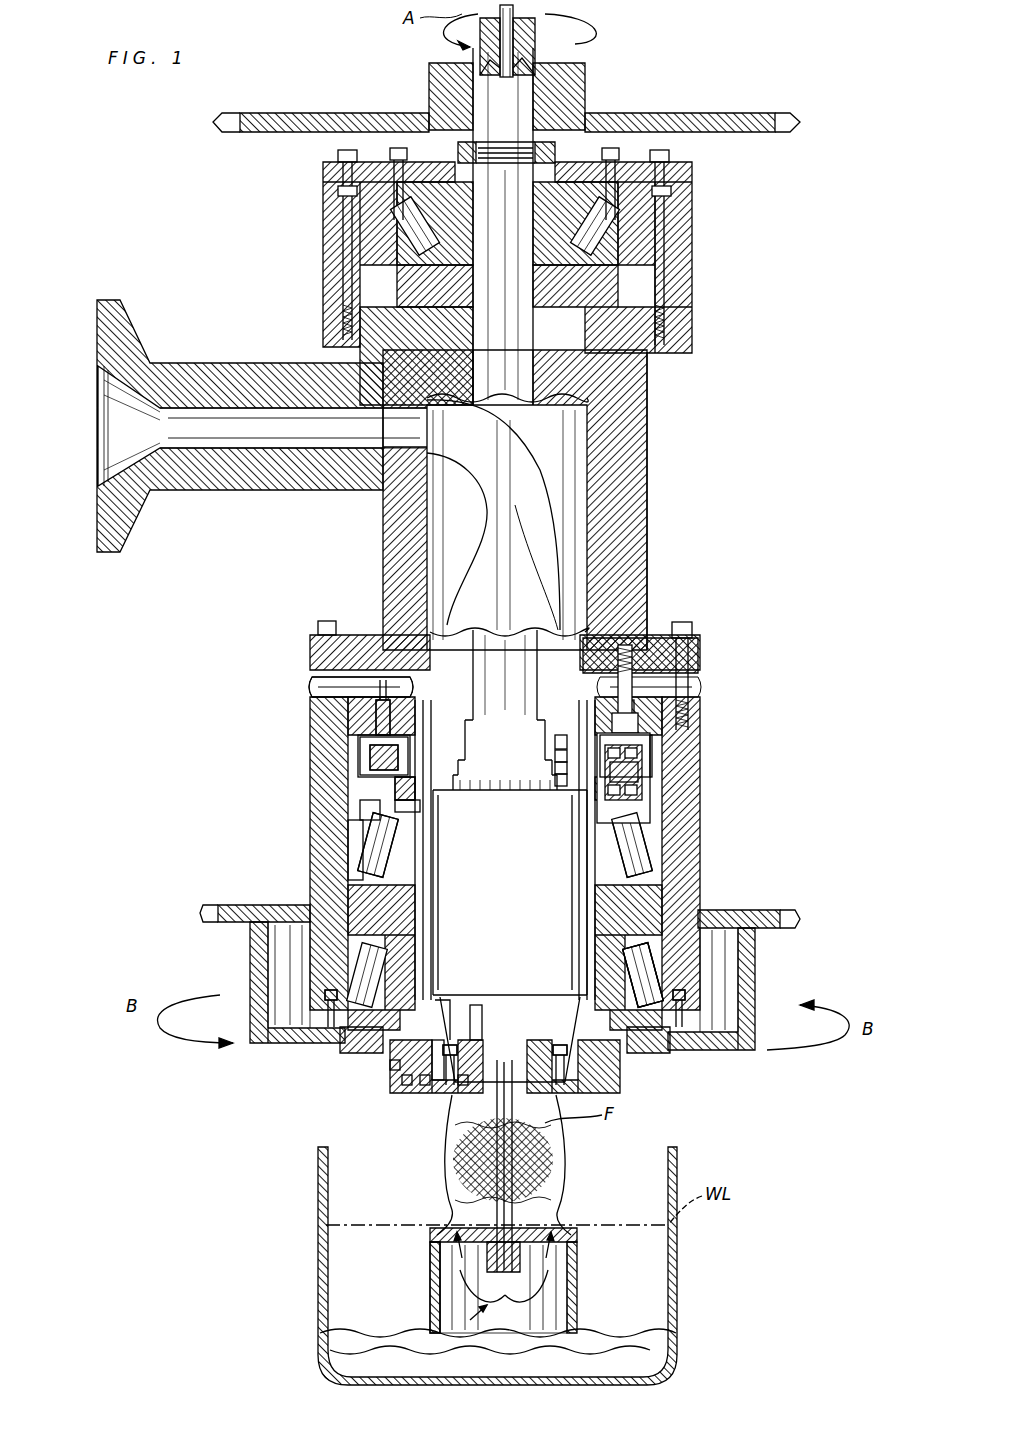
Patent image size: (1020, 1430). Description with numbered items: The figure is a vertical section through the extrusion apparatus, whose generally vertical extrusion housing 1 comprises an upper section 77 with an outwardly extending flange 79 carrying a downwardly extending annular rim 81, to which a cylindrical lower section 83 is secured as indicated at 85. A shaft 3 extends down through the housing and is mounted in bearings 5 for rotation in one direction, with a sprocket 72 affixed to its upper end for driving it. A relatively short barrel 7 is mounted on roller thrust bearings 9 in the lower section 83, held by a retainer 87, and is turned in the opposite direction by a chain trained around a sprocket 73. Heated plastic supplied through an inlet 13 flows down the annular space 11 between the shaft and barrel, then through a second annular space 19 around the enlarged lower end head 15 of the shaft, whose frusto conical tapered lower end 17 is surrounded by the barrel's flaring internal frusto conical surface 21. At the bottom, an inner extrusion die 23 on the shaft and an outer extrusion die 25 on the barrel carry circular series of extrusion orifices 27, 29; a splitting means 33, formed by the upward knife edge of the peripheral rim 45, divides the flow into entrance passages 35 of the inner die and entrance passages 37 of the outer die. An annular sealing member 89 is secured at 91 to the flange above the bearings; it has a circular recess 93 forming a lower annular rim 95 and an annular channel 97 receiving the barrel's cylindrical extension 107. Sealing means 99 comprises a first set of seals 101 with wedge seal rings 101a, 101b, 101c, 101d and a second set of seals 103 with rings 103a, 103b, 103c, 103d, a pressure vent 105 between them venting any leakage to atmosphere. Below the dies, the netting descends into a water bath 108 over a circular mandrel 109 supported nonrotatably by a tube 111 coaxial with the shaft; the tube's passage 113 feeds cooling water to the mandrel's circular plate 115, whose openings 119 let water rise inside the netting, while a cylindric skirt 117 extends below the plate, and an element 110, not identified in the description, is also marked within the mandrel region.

The extrusion housing 1 is at (650, 462).
The shaft 3 is at (548, 363).
The bearings 5 is at (655, 210).
The barrel 7 is at (655, 918).
The roller thrust bearings 9 is at (372, 850).
The annular space 11 is at (358, 740).
The inlet 13 is at (98, 452).
The lower end head 15 is at (510, 812).
The tapered lower end 17 is at (565, 1000).
The second annular space 19 is at (648, 965).
The internal frusto conical surface 21 is at (635, 992).
The inner extrusion die 23 is at (480, 1085).
The outer extrusion die 25 is at (395, 1065).
The extrusion orifices 27 is at (425, 1082).
The extrusion orifices 29 is at (408, 1080).
The splitting means 33 is at (445, 1015).
The entrance passages 35 is at (448, 1042).
The entrance passages 37 is at (390, 1060).
The peripheral rim 45 is at (478, 1040).
The sprocket 72 is at (728, 115).
The sprocket 73 is at (785, 912).
The upper section 77 is at (647, 418).
The flange 79 is at (668, 632).
The annular rim 81 is at (698, 672).
The lower section 83 is at (310, 892).
The securing means 85 is at (318, 628).
The retainer 87 is at (310, 1045).
The annular sealing member 89 is at (376, 712).
The securing means 91 is at (665, 710).
The circular recess 93 is at (412, 806).
The lower annular rim 95 is at (352, 830).
The annular channel 97 is at (372, 750).
The sealing means 99 is at (398, 780).
The first set of seals 101 is at (650, 750).
The wedge seal ring 101a is at (595, 780).
The wedge seal ring 101b is at (592, 768).
The wedge seal ring 101c is at (590, 755).
The wedge seal ring 101d is at (575, 742).
The second set of seals 103 is at (648, 775).
The wedge seal ring 103a is at (645, 755).
The wedge seal ring 103b is at (648, 762).
The wedge seal ring 103c is at (648, 790).
The wedge seal ring 103d is at (650, 800).
The pressure vent 105 is at (312, 687).
The cylindrical extension 107 is at (365, 805).
The water bath 108 is at (682, 1270).
The mandrel 109 is at (432, 1262).
The flow arrow 110 is at (470, 1310).
The tube 111 is at (545, 22).
The passage 113 is at (512, 1275).
The circular plate 115 is at (540, 1238).
The cylindric skirt 117 is at (577, 1290).
The openings 119 is at (558, 1245).